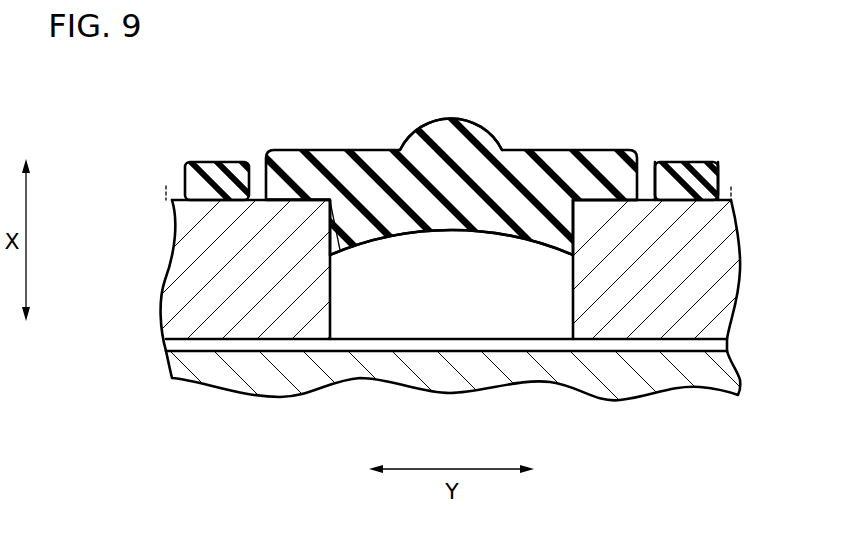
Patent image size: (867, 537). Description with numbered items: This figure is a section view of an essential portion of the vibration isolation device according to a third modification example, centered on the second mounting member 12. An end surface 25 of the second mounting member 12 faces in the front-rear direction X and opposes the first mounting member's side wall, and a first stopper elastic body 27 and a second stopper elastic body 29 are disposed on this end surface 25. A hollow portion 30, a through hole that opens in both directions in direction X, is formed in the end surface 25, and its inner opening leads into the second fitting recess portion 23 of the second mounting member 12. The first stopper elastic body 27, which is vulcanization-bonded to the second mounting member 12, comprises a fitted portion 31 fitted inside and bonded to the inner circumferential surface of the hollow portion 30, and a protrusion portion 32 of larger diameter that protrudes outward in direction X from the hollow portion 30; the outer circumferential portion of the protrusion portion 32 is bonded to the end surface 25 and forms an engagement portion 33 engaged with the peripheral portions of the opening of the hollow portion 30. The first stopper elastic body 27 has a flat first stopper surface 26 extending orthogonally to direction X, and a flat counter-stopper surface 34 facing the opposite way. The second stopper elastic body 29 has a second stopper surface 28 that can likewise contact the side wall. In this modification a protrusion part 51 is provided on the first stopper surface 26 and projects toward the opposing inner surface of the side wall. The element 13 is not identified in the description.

The second mounting member 12 is at (739, 270).
The base member 13 is at (739, 373).
The second fitting recess portion 23 is at (712, 355).
The end surface 25 is at (172, 200).
The first stopper surface 26 is at (340, 150).
The first stopper elastic body 27 is at (100, 218).
The second stopper surface 28 is at (688, 162).
The second stopper elastic body 29 is at (218, 162).
The hollow portion 30 is at (332, 307).
The fitted portion 31 is at (337, 246).
The protrusion portion 32 is at (288, 199).
The engagement portion 33 is at (612, 160).
The counter-stopper surface 34 is at (500, 232).
The protrusion part 51 is at (440, 122).